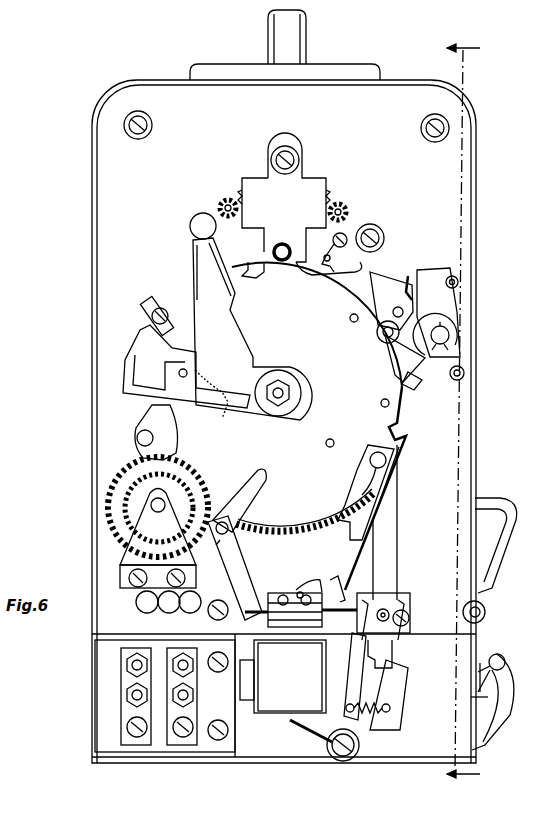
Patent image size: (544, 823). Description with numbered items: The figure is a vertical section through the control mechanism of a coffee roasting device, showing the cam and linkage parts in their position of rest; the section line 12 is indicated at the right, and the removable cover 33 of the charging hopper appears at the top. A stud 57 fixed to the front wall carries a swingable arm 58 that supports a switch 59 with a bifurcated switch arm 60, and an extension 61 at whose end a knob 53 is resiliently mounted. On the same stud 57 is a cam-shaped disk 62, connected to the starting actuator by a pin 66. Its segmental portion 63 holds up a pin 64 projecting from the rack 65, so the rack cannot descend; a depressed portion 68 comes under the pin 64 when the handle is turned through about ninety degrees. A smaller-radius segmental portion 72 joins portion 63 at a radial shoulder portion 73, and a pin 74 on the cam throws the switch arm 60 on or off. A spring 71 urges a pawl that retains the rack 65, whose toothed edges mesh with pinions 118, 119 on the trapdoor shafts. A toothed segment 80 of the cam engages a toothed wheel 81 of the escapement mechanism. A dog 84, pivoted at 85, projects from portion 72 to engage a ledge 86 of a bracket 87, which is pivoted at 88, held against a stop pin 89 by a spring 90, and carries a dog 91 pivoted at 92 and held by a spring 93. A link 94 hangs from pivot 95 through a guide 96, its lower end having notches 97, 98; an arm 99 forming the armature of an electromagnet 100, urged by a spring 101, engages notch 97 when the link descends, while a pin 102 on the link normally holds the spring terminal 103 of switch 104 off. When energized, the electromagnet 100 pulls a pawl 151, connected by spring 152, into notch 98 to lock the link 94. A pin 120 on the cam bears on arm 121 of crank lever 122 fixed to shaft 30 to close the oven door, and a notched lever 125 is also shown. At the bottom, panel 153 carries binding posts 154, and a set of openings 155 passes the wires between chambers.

The section line 12 is at (442, 413).
The shaft 30 is at (232, 530).
The removable cover 33 is at (322, 66).
The knob 53 is at (192, 222).
The stud 57 is at (288, 396).
The arm 58 is at (263, 362).
The switch 59 is at (155, 314).
The bifurcated switch arm 60 is at (196, 410).
The extension 61 is at (198, 275).
The cam-shaped disk 62 is at (382, 384).
The segmental portion 63 is at (250, 264).
The pin 64 is at (278, 244).
The rack 65 is at (290, 186).
The pin 66 is at (316, 449).
The depressed portion 68 is at (160, 372).
The spring 71 is at (346, 236).
The segmental portion 72 is at (382, 258).
The shoulder portion 73 is at (238, 275).
The pin 74 is at (228, 412).
The toothed segment 80 is at (268, 522).
The toothed wheel 81 is at (140, 497).
The dog 84 is at (398, 364).
The pivot 85 is at (351, 320).
The ledge 86 is at (418, 386).
The bracket 87 is at (430, 278).
The pivot 88 is at (450, 334).
The stop pin 89 is at (458, 280).
The spring 90 is at (464, 373).
The dog 91 is at (366, 302).
The pivot 92 is at (405, 314).
The spring 93 is at (412, 272).
The link 94 is at (390, 518).
The pivot 95 is at (380, 338).
The guide 96 is at (385, 600).
The notch 97 is at (410, 620).
The notch 98 is at (398, 655).
The arm 99 is at (366, 688).
The electromagnet 100 is at (280, 694).
The spring 101 is at (330, 754).
The pin 102 is at (390, 613).
The spring terminal 103 is at (340, 602).
The switch 104 is at (300, 628).
The pinion 118 is at (222, 202).
The pinion 119 is at (345, 204).
The pin 120 is at (376, 468).
The arm 121 is at (246, 494).
The crank lever 122 is at (240, 580).
The lever 125 is at (375, 506).
The pawl 151 is at (388, 724).
The spring 152 is at (384, 732).
The panel 153 is at (122, 688).
The binding posts 154 is at (124, 665).
The set of openings 155 is at (140, 608).